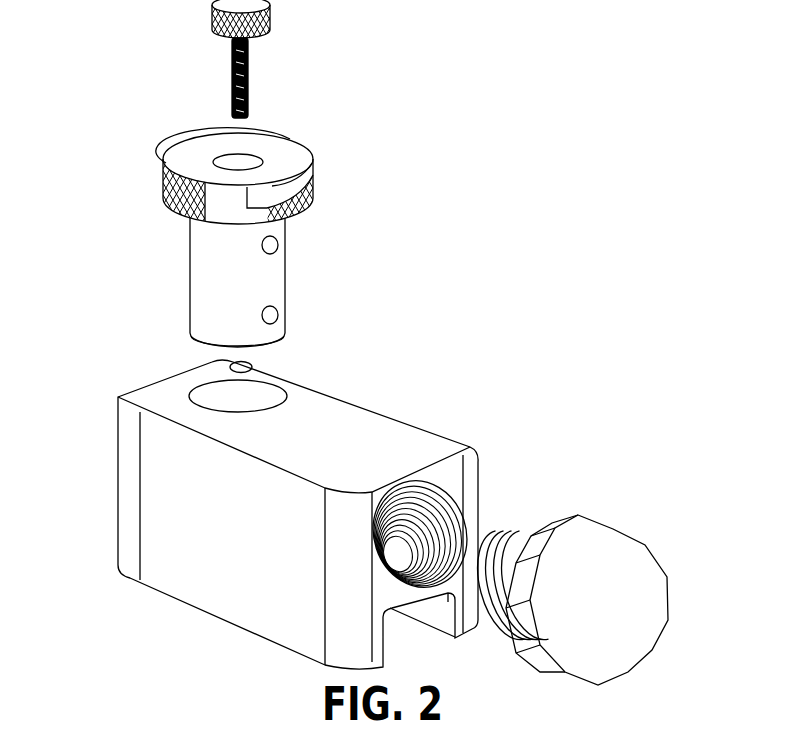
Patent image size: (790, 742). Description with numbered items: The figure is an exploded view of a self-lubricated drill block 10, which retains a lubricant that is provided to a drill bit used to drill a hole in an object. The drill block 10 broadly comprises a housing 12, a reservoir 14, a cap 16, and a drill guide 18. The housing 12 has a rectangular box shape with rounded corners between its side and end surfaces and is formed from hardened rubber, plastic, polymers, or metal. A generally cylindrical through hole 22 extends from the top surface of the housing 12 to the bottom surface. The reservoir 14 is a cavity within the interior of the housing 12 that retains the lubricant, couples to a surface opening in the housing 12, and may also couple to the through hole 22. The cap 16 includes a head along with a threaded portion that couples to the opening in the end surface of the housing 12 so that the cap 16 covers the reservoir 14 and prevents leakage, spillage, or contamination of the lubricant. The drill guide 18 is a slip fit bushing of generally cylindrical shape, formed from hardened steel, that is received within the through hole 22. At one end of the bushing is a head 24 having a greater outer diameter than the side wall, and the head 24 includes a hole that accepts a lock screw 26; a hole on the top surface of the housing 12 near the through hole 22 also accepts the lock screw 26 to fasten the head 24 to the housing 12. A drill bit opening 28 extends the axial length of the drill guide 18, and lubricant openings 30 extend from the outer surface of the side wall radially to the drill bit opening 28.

The self-lubricated drill block 10 is at (518, 153).
The housing 12 is at (305, 500).
The reservoir 14 is at (466, 512).
The cap 16 is at (643, 593).
The drill guide 18 is at (229, 221).
The through hole 22 is at (210, 392).
The head 24 is at (280, 147).
The lock screw 26 is at (249, 80).
The drill bit opening 28 is at (228, 157).
The lubricant opening 30 is at (278, 315).